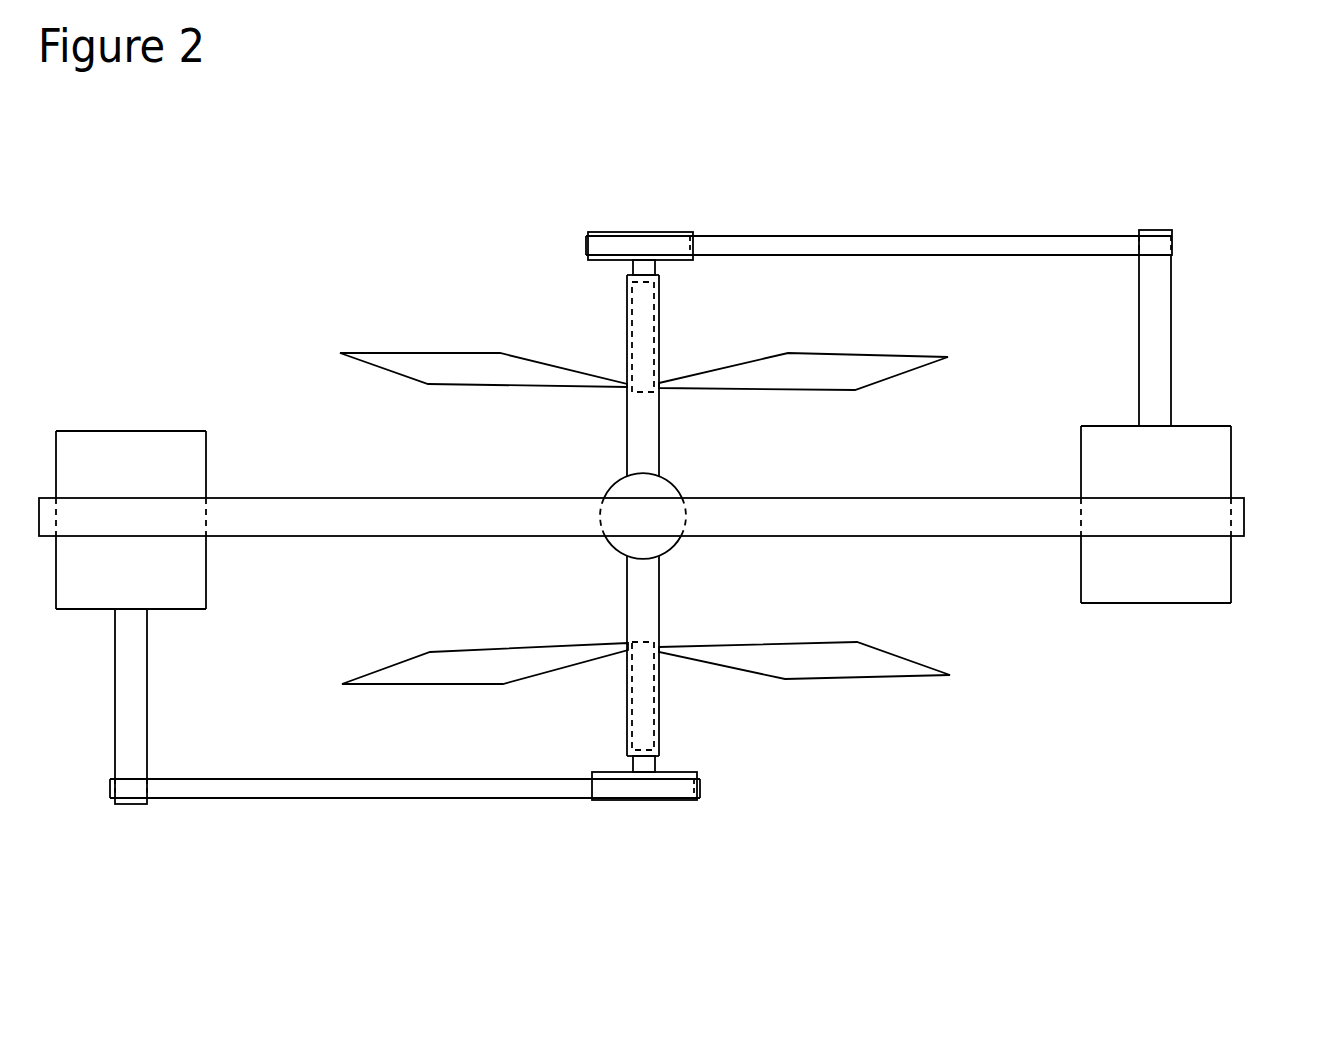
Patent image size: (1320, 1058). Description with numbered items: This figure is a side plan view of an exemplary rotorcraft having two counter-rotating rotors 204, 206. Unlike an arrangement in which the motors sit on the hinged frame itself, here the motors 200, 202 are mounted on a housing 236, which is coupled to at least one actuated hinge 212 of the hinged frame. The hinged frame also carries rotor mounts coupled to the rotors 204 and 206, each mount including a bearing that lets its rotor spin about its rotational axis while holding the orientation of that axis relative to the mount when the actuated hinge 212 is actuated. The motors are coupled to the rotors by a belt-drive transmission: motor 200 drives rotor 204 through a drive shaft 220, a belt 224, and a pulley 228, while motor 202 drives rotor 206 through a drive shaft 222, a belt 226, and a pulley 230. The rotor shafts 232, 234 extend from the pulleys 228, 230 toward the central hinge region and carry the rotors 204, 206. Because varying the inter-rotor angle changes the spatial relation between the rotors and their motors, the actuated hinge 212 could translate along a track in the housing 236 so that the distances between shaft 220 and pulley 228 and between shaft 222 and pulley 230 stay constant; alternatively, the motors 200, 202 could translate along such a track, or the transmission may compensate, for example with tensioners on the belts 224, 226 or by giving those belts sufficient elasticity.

The motor 200 is at (1205, 604).
The motor 202 is at (110, 431).
The rotor 204 is at (400, 352).
The rotor 206 is at (858, 677).
The actuated hinge 212 is at (608, 545).
The drive shaft 220 is at (1171, 333).
The drive shaft 222 is at (115, 682).
The belt 224 is at (940, 234).
The belt 226 is at (258, 797).
The pulley 228 is at (670, 232).
The pulley 230 is at (598, 800).
The upper rotor shaft 232 is at (627, 455).
The lower rotor shaft 234 is at (660, 577).
The housing 236 is at (820, 497).